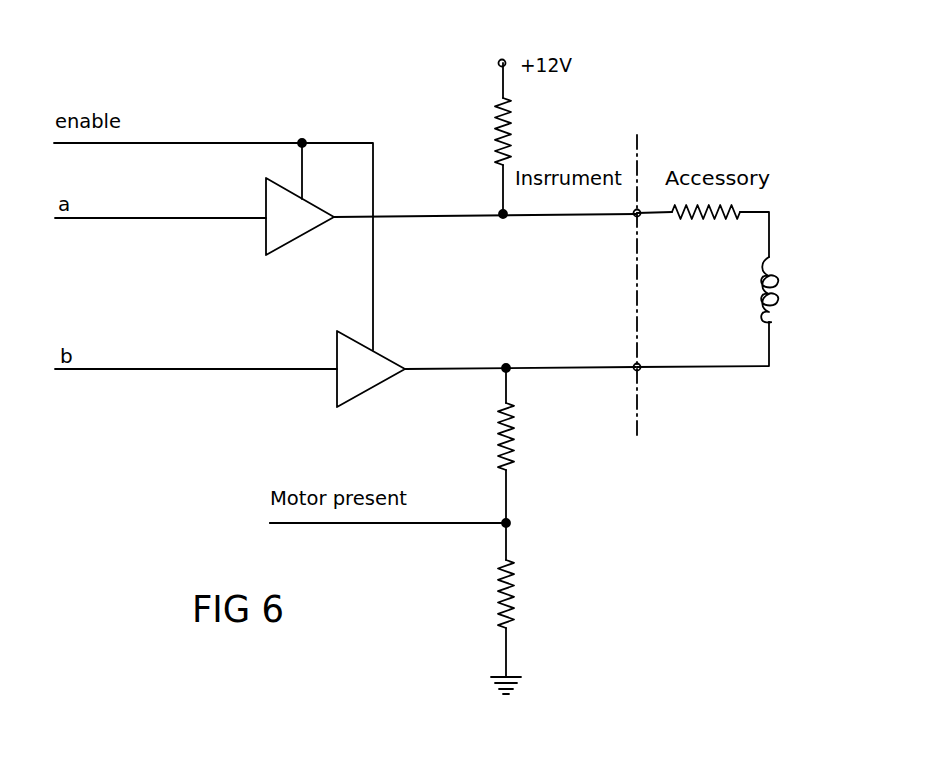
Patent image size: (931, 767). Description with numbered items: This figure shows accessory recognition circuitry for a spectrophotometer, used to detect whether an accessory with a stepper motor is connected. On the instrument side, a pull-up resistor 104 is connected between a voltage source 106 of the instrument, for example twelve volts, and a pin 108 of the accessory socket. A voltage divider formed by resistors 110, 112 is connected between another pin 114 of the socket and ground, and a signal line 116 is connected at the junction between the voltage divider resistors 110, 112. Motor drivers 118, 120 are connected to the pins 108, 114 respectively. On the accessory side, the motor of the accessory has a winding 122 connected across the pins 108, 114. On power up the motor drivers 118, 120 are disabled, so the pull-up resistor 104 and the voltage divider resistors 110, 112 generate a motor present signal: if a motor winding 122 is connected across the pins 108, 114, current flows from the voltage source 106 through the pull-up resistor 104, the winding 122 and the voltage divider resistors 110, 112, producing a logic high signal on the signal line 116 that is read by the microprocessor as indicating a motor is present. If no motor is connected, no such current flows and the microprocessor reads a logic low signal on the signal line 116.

The pull-up resistor 104 is at (496, 140).
The voltage source 106 is at (500, 63).
The pin 108 is at (634, 216).
The resistor 110 is at (514, 432).
The resistor 112 is at (514, 598).
The pin 114 is at (634, 364).
The signal line 116 is at (419, 533).
The motor driver 118 is at (280, 228).
The motor driver 120 is at (348, 388).
The winding 122 is at (740, 286).